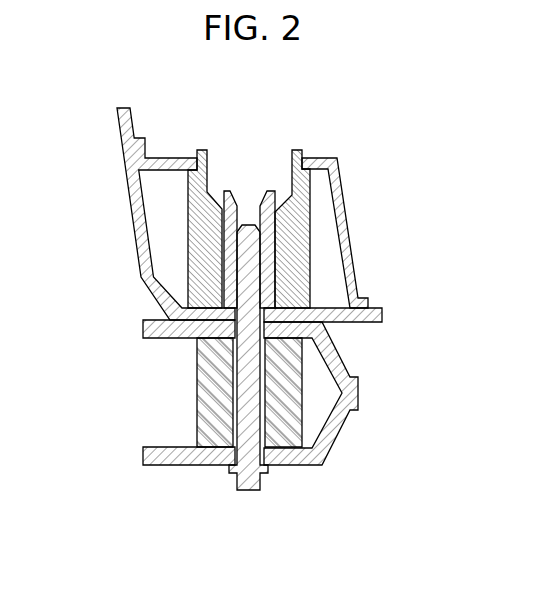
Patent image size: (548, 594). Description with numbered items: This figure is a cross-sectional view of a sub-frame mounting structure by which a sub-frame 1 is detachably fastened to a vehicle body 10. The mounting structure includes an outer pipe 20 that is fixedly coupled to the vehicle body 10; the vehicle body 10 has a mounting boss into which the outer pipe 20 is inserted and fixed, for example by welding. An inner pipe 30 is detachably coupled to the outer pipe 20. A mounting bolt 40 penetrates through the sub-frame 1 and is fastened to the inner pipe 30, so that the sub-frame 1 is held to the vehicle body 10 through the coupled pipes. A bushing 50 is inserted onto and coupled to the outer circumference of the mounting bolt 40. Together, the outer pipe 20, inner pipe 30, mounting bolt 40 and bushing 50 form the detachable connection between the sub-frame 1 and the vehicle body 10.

The sub-frame 1 is at (328, 443).
The vehicle body 10 is at (135, 202).
The outer pipe 20 is at (201, 258).
The inner pipe 30 is at (278, 257).
The mounting bolt 40 is at (248, 483).
The bushing 50 is at (203, 397).